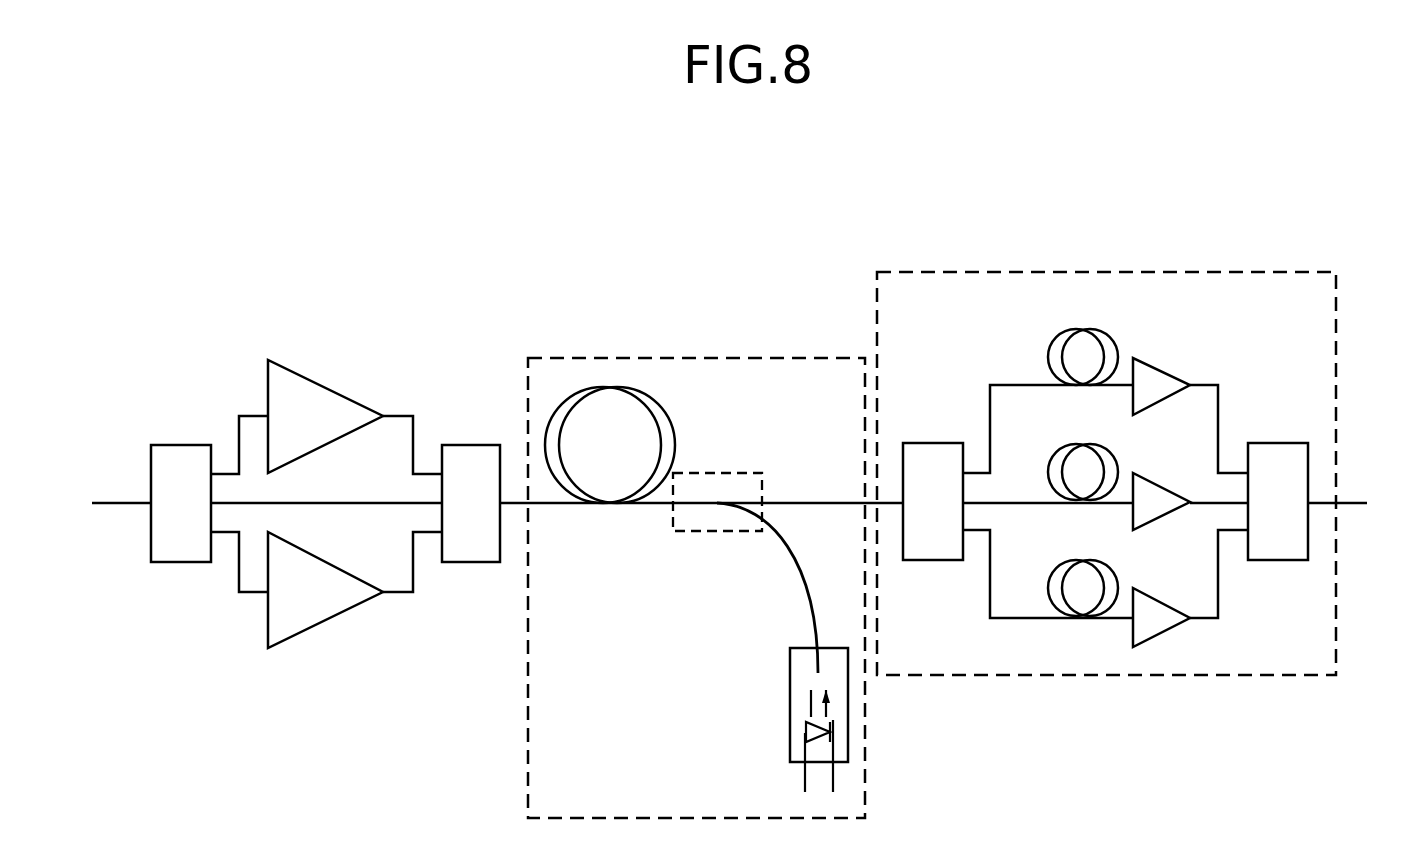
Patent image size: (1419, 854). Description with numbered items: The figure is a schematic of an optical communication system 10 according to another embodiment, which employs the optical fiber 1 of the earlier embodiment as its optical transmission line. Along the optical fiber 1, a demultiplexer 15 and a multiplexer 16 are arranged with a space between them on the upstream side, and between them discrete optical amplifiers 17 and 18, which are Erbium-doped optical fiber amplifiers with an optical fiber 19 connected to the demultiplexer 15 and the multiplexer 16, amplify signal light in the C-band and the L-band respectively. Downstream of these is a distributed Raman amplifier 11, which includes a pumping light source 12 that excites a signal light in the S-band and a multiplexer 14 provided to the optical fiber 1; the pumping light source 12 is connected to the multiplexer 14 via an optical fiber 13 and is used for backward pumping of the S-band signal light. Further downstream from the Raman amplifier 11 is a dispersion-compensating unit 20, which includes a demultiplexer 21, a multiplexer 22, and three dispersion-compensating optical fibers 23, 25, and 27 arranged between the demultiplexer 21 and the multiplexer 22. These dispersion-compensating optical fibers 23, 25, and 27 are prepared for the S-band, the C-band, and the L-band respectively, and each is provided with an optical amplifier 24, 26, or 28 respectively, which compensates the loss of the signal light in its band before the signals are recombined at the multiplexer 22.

The optical fiber 1 is at (729, 437).
The optical communication system 10 is at (703, 270).
The distributed Raman amplifier 11 is at (764, 588).
The pumping light source 12 is at (746, 720).
The optical fiber 13 is at (744, 588).
The multiplexer 14 is at (687, 538).
The demultiplexer 15 is at (213, 596).
The multiplexer 16 is at (519, 438).
The discrete optical amplifier 17 is at (302, 366).
The discrete optical amplifier 18 is at (315, 619).
The optical fiber 19 is at (461, 463).
The dispersion-compensating unit 20 is at (1088, 469).
The demultiplexer 21 is at (959, 466).
The multiplexer 22 is at (1290, 494).
The dispersion-compensating optical fiber 23 is at (979, 292).
The optical amplifier 24 is at (1194, 350).
The dispersion-compensating optical fiber 25 is at (951, 378).
The optical amplifier 26 is at (1218, 561).
The dispersion-compensating optical fiber 27 is at (1039, 654).
The optical amplifier 28 is at (1211, 653).